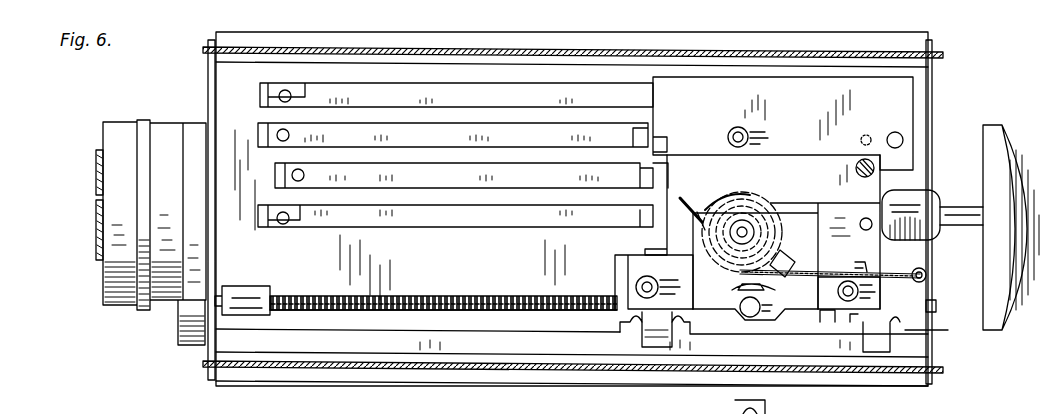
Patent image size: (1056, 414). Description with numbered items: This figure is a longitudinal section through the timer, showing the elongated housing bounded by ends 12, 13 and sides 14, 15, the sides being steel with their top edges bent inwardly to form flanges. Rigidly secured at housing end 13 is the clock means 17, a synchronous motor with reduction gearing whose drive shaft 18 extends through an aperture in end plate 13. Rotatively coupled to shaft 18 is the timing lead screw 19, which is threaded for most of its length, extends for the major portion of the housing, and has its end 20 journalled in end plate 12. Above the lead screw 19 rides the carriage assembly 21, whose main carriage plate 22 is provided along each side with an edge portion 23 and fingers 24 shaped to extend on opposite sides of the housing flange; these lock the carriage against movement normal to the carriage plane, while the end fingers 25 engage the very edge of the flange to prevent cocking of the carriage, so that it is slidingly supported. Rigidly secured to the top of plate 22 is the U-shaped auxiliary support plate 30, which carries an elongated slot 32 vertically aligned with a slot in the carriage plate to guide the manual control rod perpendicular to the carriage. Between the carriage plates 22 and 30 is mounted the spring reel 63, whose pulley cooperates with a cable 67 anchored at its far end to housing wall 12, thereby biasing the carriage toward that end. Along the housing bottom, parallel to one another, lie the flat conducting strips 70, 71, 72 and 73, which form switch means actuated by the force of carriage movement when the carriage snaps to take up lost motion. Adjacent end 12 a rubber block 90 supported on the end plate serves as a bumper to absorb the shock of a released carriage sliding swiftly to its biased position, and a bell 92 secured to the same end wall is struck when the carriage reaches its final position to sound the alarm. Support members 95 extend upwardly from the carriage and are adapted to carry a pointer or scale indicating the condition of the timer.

The housing end 12 is at (934, 116).
The housing end 13 is at (206, 98).
The housing side 14 is at (526, 72).
The housing side 15 is at (556, 347).
The clock means 17 is at (112, 108).
The drive shaft 18 is at (222, 286).
The timing lead screw 19 is at (320, 296).
The end of timing screw 20 is at (940, 312).
The carriage assembly 21 is at (783, 123).
The main carriage plate 22 is at (668, 238).
The edge portion 23 is at (755, 314).
The fingers 24 is at (658, 348).
The end fingers 25 is at (628, 328).
The auxiliary support plate 30 is at (800, 210).
The elongated slot 32 is at (735, 292).
The spring reel 63 is at (720, 200).
The cable 67 is at (862, 275).
The conducting strip 70 is at (446, 222).
The conducting strip 71 is at (471, 175).
The conducting strip 72 is at (453, 135).
The conducting strip 73 is at (488, 102).
The rubber block 90 is at (908, 200).
The bell 92 is at (1000, 128).
The support members 95 is at (632, 282).